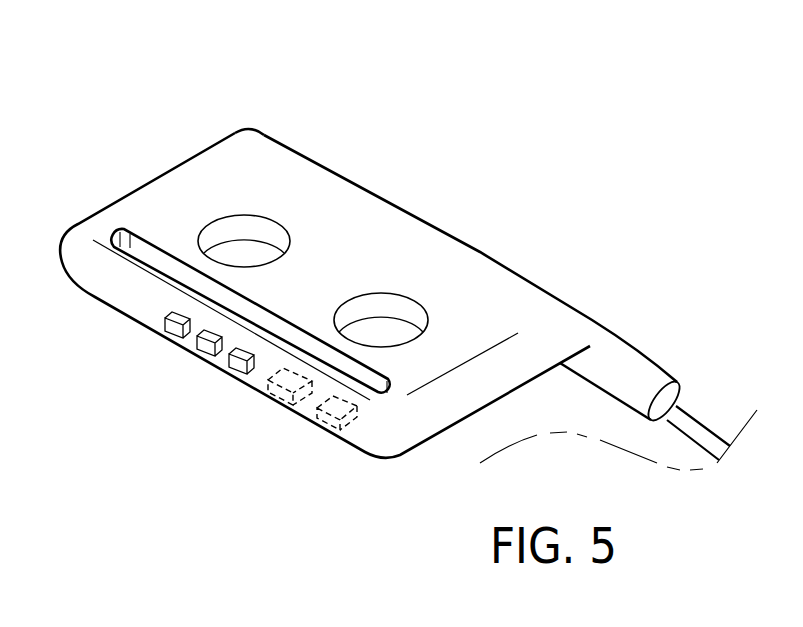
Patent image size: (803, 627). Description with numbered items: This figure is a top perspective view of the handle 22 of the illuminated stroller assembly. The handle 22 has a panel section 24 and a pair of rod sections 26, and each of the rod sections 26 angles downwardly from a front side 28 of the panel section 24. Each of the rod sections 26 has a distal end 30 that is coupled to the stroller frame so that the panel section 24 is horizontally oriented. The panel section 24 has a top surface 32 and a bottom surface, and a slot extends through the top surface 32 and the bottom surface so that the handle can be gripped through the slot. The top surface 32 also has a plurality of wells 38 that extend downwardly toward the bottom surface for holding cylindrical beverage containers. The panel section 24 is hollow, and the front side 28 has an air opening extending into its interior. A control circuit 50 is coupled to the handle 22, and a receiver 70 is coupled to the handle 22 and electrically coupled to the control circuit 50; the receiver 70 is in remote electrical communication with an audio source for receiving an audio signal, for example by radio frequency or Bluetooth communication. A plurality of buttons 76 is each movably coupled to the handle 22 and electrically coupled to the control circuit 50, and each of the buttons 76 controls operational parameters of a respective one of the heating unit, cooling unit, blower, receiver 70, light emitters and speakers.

The handle 22 is at (237, 133).
The panel section 24 is at (368, 239).
The rod sections 26 is at (644, 350).
The front side 28 is at (511, 269).
The distal end 30 is at (723, 425).
The top surface 32 is at (316, 211).
The wells 38 is at (252, 230).
The control circuit 50 is at (347, 419).
The receiver 70 is at (283, 392).
The buttons 76 is at (237, 374).